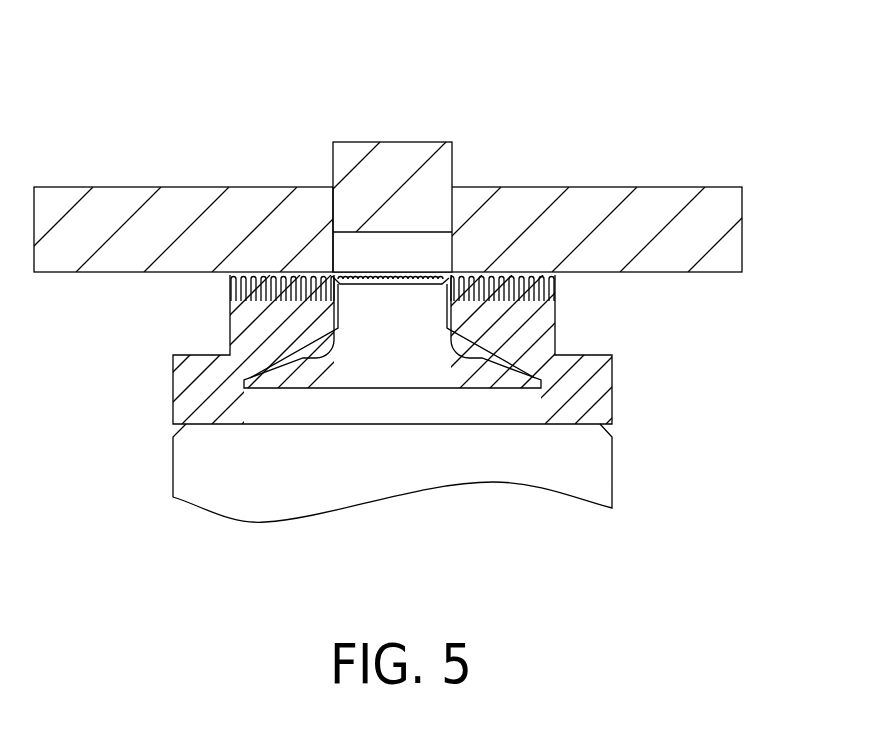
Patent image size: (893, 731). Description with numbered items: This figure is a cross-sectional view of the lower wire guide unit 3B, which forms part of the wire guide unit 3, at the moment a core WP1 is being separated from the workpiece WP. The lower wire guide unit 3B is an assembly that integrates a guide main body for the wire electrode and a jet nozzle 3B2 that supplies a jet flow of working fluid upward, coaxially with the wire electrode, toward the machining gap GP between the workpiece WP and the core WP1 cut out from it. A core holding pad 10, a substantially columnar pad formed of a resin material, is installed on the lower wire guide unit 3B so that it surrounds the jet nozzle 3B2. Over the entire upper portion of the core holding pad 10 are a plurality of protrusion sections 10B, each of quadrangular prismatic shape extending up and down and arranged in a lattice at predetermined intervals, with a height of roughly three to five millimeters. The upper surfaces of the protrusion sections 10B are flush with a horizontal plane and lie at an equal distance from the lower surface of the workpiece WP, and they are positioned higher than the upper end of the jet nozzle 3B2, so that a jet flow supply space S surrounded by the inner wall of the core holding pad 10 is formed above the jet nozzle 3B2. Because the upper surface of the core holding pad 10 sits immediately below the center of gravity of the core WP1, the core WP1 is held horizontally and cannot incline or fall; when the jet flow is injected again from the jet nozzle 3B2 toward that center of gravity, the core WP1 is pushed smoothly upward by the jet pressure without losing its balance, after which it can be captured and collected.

The workpiece WP is at (113, 212).
The core WP1 is at (355, 160).
The machining gap GP is at (331, 207).
The jet flow supply space S is at (392, 271).
The core holding pad 10 is at (247, 343).
The protrusion sections 10B is at (552, 284).
The jet nozzle 3B2 is at (367, 328).
The wire guide unit 3 is at (482, 452).
The lower wire guide unit 3B is at (590, 468).